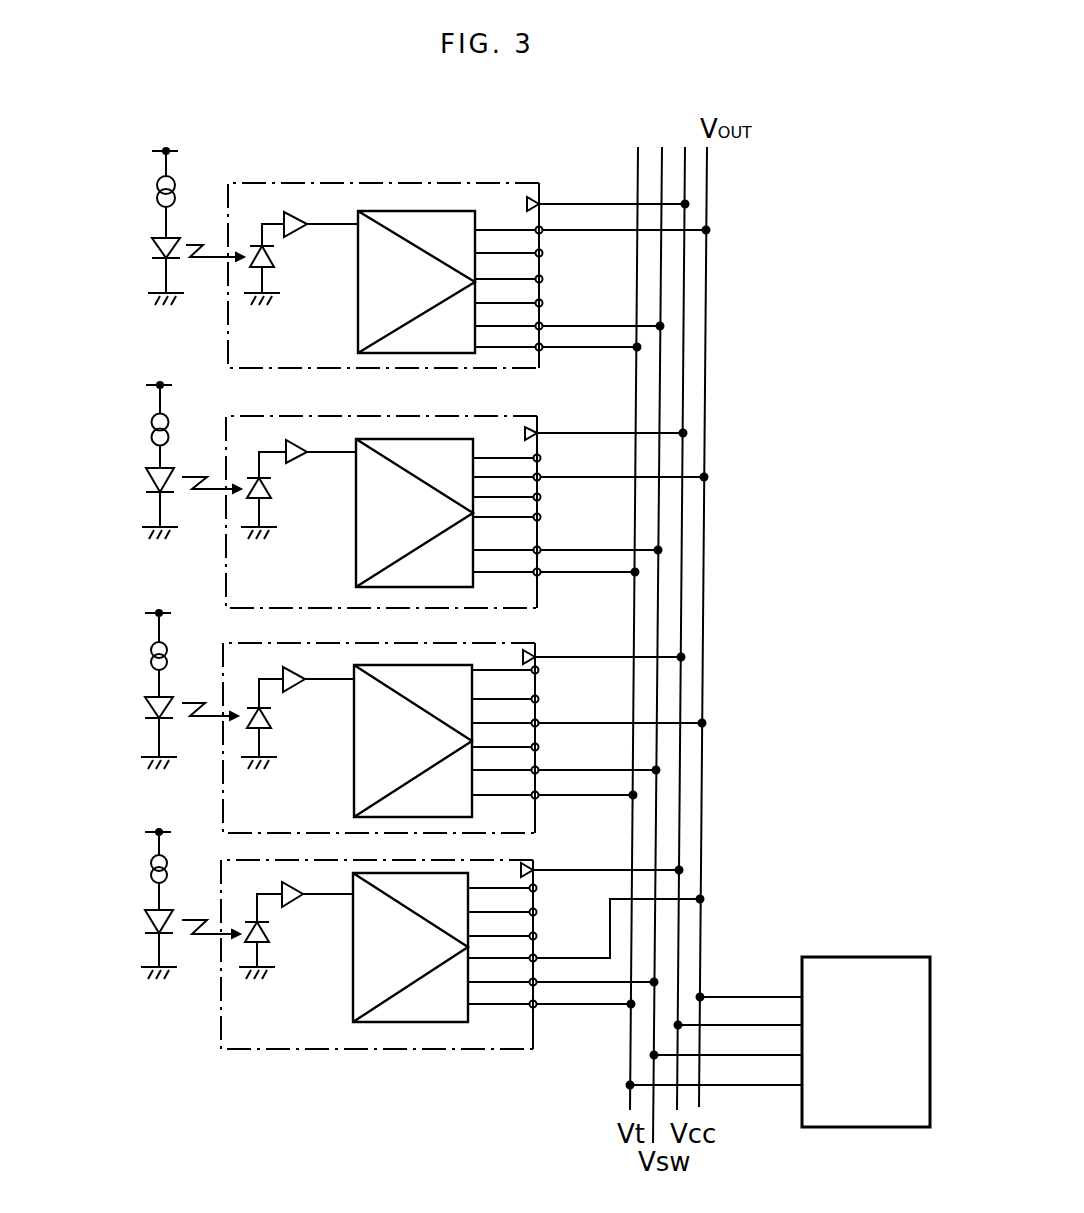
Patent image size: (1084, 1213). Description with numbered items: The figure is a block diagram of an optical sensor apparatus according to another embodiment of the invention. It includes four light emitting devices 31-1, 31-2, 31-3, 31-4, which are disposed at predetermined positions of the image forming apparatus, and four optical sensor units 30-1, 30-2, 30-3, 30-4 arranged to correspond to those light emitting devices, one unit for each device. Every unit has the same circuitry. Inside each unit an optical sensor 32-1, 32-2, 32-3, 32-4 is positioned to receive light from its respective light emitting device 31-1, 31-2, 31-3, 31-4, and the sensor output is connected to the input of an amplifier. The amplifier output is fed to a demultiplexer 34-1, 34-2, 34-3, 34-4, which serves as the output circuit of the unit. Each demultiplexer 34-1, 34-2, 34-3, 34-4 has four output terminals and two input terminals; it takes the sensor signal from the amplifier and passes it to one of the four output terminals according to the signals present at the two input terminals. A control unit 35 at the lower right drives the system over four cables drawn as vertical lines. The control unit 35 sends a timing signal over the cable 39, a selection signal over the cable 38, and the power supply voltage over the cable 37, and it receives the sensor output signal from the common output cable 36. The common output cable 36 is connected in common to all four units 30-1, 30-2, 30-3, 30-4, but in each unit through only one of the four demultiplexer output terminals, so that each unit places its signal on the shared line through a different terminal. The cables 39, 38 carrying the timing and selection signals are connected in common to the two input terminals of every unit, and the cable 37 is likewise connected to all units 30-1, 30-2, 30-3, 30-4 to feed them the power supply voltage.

The optical sensor unit 30-1 is at (421, 183).
The optical sensor unit 30-2 is at (379, 416).
The optical sensor unit 30-3 is at (381, 645).
The optical sensor unit 30-4 is at (363, 1052).
The light emitting device 31-1 is at (158, 250).
The light emitting device 31-2 is at (148, 482).
The light emitting device 31-3 is at (147, 707).
The light emitting device 31-4 is at (146, 926).
The optical sensor 32-1 is at (270, 254).
The optical sensor 32-2 is at (271, 488).
The optical sensor 32-3 is at (270, 727).
The optical sensor 32-4 is at (269, 929).
The demultiplexer 34-1 is at (358, 340).
The demultiplexer 34-2 is at (356, 571).
The demultiplexer 34-3 is at (360, 798).
The demultiplexer 34-4 is at (353, 982).
The control unit 35 is at (886, 959).
The common output cable 36 is at (703, 633).
The cable 37 is at (682, 588).
The cable 38 is at (660, 517).
The cable 39 is at (636, 405).